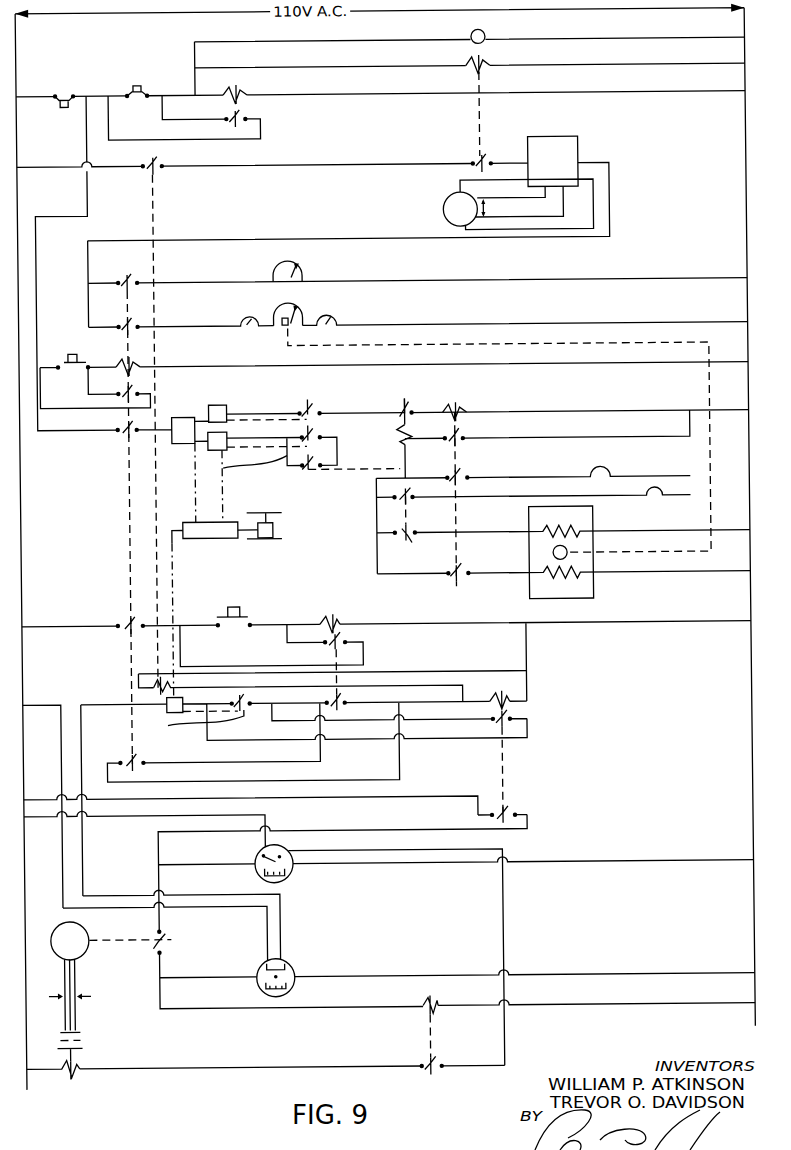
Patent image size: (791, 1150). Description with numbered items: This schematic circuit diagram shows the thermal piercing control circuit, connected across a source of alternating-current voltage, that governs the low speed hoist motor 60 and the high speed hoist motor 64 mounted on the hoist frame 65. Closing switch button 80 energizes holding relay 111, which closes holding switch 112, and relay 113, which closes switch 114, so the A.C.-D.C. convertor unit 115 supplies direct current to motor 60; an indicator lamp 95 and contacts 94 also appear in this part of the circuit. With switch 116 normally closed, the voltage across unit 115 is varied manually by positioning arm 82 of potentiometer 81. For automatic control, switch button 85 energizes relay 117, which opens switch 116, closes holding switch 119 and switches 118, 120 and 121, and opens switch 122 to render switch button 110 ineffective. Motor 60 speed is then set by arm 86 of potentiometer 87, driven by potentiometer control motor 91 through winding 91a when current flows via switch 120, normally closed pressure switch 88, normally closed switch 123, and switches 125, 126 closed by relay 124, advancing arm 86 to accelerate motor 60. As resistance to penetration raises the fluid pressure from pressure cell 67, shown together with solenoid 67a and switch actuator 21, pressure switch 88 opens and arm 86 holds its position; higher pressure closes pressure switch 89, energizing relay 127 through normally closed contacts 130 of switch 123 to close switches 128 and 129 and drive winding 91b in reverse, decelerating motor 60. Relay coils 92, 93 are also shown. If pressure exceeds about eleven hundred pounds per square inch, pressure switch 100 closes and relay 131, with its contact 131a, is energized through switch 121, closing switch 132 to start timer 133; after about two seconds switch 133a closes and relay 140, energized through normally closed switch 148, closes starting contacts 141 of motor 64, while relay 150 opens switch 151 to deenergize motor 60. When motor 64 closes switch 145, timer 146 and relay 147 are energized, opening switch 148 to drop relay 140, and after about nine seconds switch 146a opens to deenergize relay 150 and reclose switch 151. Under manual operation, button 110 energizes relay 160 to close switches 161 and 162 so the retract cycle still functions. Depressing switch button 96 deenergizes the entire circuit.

The indicator lamp 95 is at (481, 34).
The relay 113 is at (482, 64).
The switch button 96 is at (64, 85).
The switch button 80 is at (140, 87).
The holding relay 111 is at (238, 90).
The holding switch 112 is at (238, 112).
The switch 151 is at (163, 153).
The switch 114 is at (484, 158).
The A.C.-D.C. convertor unit 115 is at (576, 152).
The low speed hoist motor 60 is at (441, 213).
The switch 116 is at (128, 275).
The potentiometer 81 is at (299, 268).
The arm 82 is at (288, 282).
The switch 118 is at (132, 312).
The arm 86 is at (278, 327).
The potentiometer 87 is at (300, 311).
The switch button 85 is at (68, 355).
The relay 117 is at (134, 356).
The holding switch 119 is at (128, 386).
The switch 120 is at (128, 422).
The pressure switch 88 is at (247, 388).
The pressure switch 89 is at (215, 452).
The contacts 94 is at (300, 472).
The hoist frame 65 is at (268, 515).
The switch actuator 21 is at (268, 534).
The solenoid 67a is at (205, 540).
The pressure cell 67 is at (259, 541).
The switch 123 is at (404, 405).
The relay 124 is at (455, 411).
The relay 127 is at (406, 437).
The normally closed contacts 130 is at (454, 432).
The switch 125 is at (455, 472).
The switch 128 is at (405, 491).
The switch 129 is at (406, 546).
The switch 126 is at (455, 567).
The relay coil 92 is at (598, 478).
The relay coil 93 is at (643, 496).
The potentiometer control motor 91 is at (587, 520).
The winding 91a is at (541, 583).
The winding 91b is at (540, 524).
The switch 122 is at (128, 618).
The switch button 110 is at (233, 610).
The relay 160 is at (330, 622).
The switch 161 is at (333, 635).
The relay 150 is at (146, 689).
The pressure switch 100 is at (167, 714).
The switch 162 is at (333, 696).
The relay 131 is at (499, 700).
The contact 131a is at (499, 714).
The switch 121 is at (128, 755).
The switch 132 is at (499, 810).
The timer 133 is at (278, 878).
The switch 133a is at (266, 862).
The high speed hoist motor 64 is at (46, 928).
The switch 145 is at (155, 935).
The timer 146 is at (281, 990).
The switch 146a is at (271, 963).
The relay 147 is at (430, 992).
The switch 148 is at (424, 1060).
The starting contacts 141 is at (80, 1034).
The relay 140 is at (65, 1065).